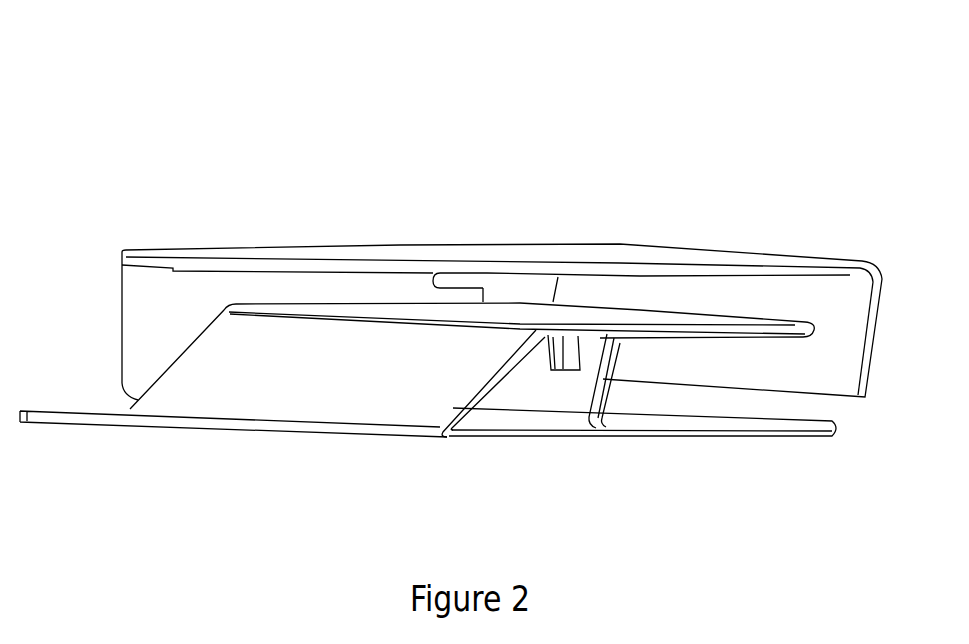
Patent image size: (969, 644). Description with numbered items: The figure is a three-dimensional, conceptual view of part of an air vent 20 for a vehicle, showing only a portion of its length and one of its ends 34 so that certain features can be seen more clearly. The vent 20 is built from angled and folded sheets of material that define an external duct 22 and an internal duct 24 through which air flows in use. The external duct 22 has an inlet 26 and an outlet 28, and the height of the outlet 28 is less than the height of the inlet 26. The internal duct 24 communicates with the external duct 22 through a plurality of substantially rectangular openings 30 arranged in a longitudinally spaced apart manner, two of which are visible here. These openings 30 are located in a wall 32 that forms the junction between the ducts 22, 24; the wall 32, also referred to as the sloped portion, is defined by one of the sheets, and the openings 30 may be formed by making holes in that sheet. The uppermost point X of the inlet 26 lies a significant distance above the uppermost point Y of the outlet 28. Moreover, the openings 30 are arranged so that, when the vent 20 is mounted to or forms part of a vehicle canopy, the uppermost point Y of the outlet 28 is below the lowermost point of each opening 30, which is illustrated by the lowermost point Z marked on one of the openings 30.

The air vent 20 is at (221, 84).
The external duct 22 is at (538, 311).
The internal duct 24 is at (511, 404).
The inlet 26 is at (154, 314).
The outlet 28 is at (840, 414).
The rectangular openings 30 is at (534, 360).
The wall 32 is at (617, 352).
The end 34 is at (122, 290).
The uppermost point of the inlet X is at (531, 275).
The uppermost point of the outlet Y is at (822, 394).
The lowermost point of an opening Z is at (578, 371).